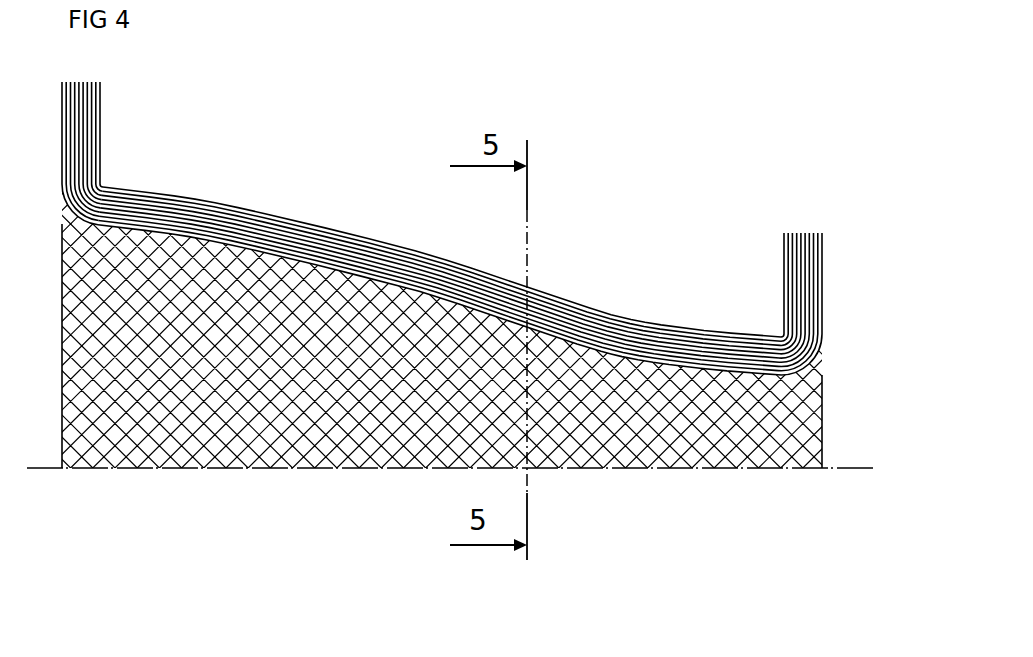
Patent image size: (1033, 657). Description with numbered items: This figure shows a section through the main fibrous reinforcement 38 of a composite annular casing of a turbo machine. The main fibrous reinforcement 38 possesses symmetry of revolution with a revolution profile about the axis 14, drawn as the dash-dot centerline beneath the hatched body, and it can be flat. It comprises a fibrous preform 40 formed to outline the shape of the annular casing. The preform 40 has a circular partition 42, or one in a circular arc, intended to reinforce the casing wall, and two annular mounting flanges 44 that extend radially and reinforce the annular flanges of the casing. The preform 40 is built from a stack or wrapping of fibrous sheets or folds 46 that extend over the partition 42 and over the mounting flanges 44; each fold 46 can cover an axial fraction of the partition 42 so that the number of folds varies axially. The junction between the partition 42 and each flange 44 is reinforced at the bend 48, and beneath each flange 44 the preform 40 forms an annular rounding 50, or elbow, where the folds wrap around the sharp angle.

The axis 14 is at (373, 470).
The main fibrous reinforcement 38 is at (718, 94).
The fibrous preform 40 is at (566, 120).
The circular partition 42 is at (639, 240).
The annular mounting flange 44 is at (121, 125).
The fibrous fold 46 is at (270, 210).
The bend portion 48 is at (103, 187).
The annular rounding 50 is at (63, 223).